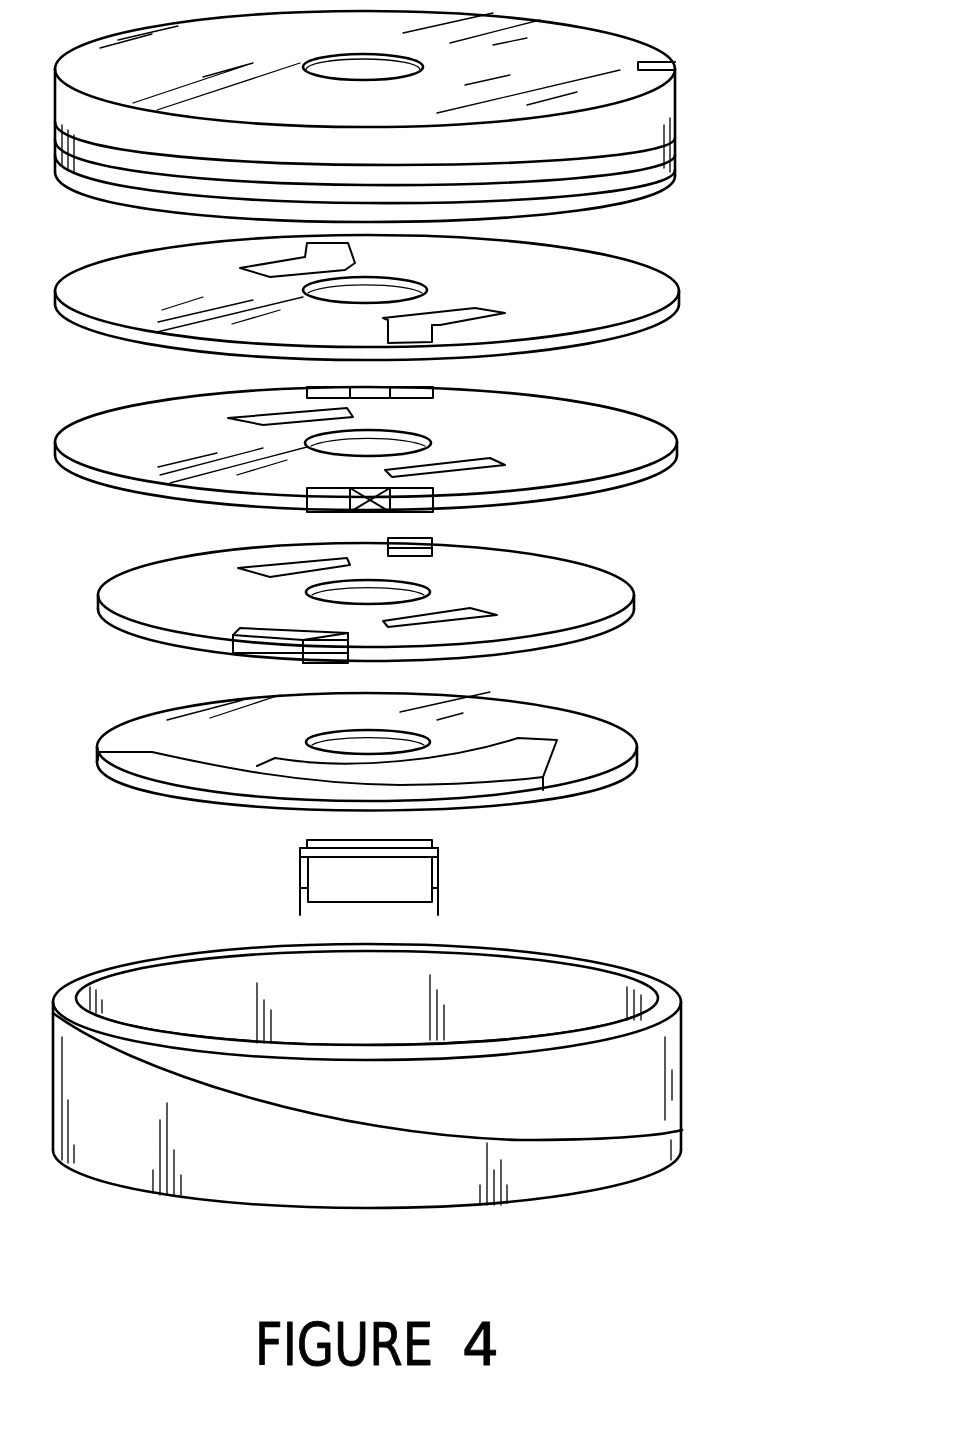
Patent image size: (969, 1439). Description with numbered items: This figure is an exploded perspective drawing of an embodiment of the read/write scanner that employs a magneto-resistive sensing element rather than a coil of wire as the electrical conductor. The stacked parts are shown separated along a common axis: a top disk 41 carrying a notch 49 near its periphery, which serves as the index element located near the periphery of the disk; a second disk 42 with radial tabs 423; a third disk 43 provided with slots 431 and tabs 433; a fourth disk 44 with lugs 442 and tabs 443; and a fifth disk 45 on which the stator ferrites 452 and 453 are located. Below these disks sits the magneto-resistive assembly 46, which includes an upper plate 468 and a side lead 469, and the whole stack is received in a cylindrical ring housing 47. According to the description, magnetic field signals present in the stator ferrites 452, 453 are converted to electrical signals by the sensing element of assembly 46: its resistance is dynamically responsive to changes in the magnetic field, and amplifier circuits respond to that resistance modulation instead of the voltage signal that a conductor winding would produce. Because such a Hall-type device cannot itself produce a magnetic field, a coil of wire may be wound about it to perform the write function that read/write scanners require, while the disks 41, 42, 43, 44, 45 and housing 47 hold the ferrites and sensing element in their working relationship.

The top disc (cap) 41 is at (678, 132).
The notch 49 is at (676, 67).
The second disc 42 is at (681, 299).
The tab of second disc 423 is at (240, 266).
The third disc 43 is at (680, 452).
The slot of third disc 431 is at (425, 387).
The tab of third disc 433 is at (235, 416).
The fourth disc 44 is at (640, 600).
The lug of fourth disc 442 is at (238, 652).
The tab of fourth disc 443 is at (240, 567).
The fifth disc 45 is at (640, 750).
The stator ferrite 452 is at (137, 787).
The stator ferrite 453 is at (548, 750).
The coil/sensor element 46 is at (440, 873).
The top plate of element 46 468 is at (323, 837).
The side lead of element 46 469 is at (303, 889).
The ring housing 47 is at (684, 1088).